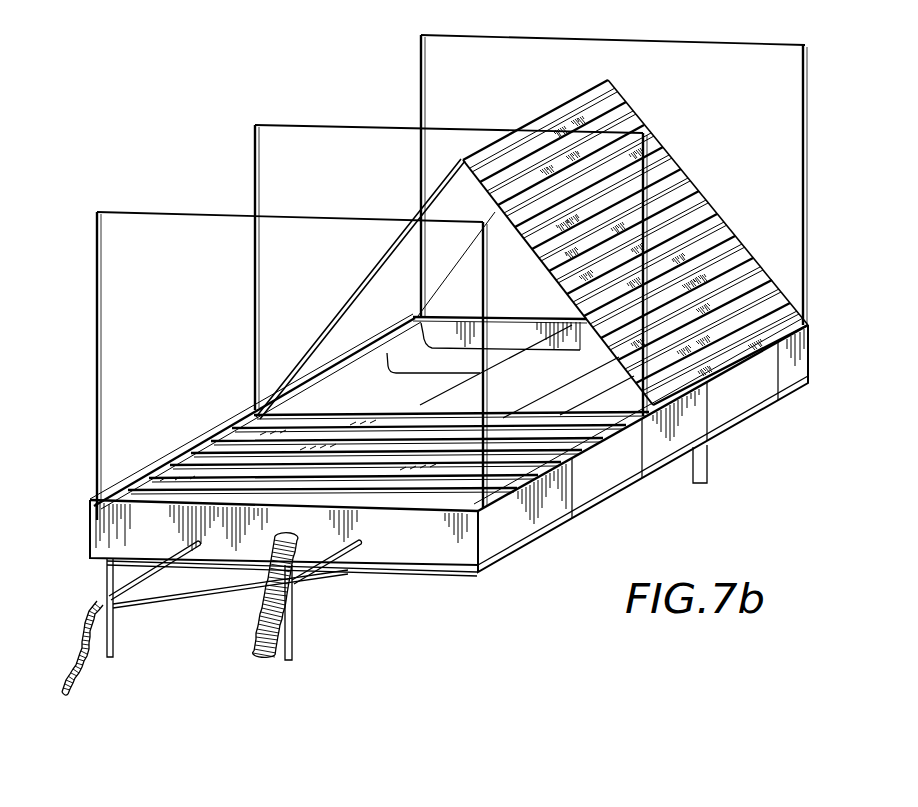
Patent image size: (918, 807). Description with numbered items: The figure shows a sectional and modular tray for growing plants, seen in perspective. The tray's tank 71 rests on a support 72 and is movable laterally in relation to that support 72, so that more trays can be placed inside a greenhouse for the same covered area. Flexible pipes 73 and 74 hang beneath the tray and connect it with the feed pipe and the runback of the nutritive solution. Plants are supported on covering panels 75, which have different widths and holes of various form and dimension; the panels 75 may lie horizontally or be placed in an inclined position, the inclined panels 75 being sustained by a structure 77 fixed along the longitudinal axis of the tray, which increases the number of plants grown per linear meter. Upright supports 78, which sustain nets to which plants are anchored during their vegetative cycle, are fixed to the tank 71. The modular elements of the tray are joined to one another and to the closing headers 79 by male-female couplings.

The tank 71 is at (90, 518).
The support 72 is at (327, 588).
The flexible pipe 73 is at (82, 632).
The flexible pipe 74 is at (250, 635).
The covering panels 75 is at (693, 190).
The structure 77 is at (367, 284).
The supports 78 is at (97, 280).
The closing headers 79 is at (490, 545).